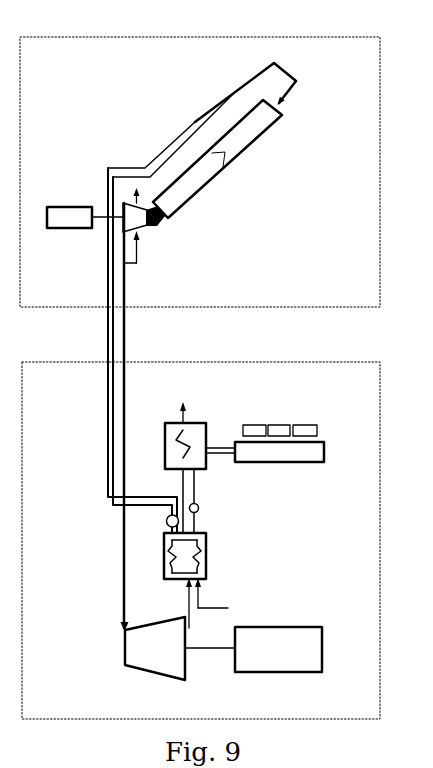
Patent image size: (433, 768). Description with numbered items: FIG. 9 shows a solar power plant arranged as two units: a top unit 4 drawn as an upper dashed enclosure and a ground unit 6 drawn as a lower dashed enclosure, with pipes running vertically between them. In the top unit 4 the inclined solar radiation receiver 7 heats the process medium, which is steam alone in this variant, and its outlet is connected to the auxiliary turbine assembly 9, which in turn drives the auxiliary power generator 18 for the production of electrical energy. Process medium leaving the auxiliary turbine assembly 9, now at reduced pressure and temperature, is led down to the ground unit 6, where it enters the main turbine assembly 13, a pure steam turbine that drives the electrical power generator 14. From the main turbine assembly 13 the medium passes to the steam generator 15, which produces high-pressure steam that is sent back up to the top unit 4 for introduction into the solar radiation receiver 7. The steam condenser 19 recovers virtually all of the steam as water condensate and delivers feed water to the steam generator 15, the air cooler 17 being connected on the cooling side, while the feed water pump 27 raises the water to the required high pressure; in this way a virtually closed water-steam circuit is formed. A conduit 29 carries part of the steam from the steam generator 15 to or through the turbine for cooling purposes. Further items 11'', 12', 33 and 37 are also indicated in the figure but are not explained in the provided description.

The top unit 4 is at (380, 163).
The ground unit 6 is at (380, 530).
The solar radiation receiver 7 is at (237, 140).
The auxiliary turbine assembly 9 is at (126, 185).
The fuel supply line 11'' is at (234, 589).
The air supply line 12' is at (206, 612).
The main turbine assembly 13 is at (147, 660).
The electrical power generator 14 is at (291, 636).
The steam generator 15 is at (197, 558).
The air cooler 17 is at (285, 455).
The auxiliary power generator 18 is at (65, 205).
The steam condenser 19 is at (195, 428).
The feed water pump 27 is at (200, 511).
The conduit 29 is at (137, 263).
The slot 33 is at (212, 130).
The exhaust outlet 37 is at (178, 418).